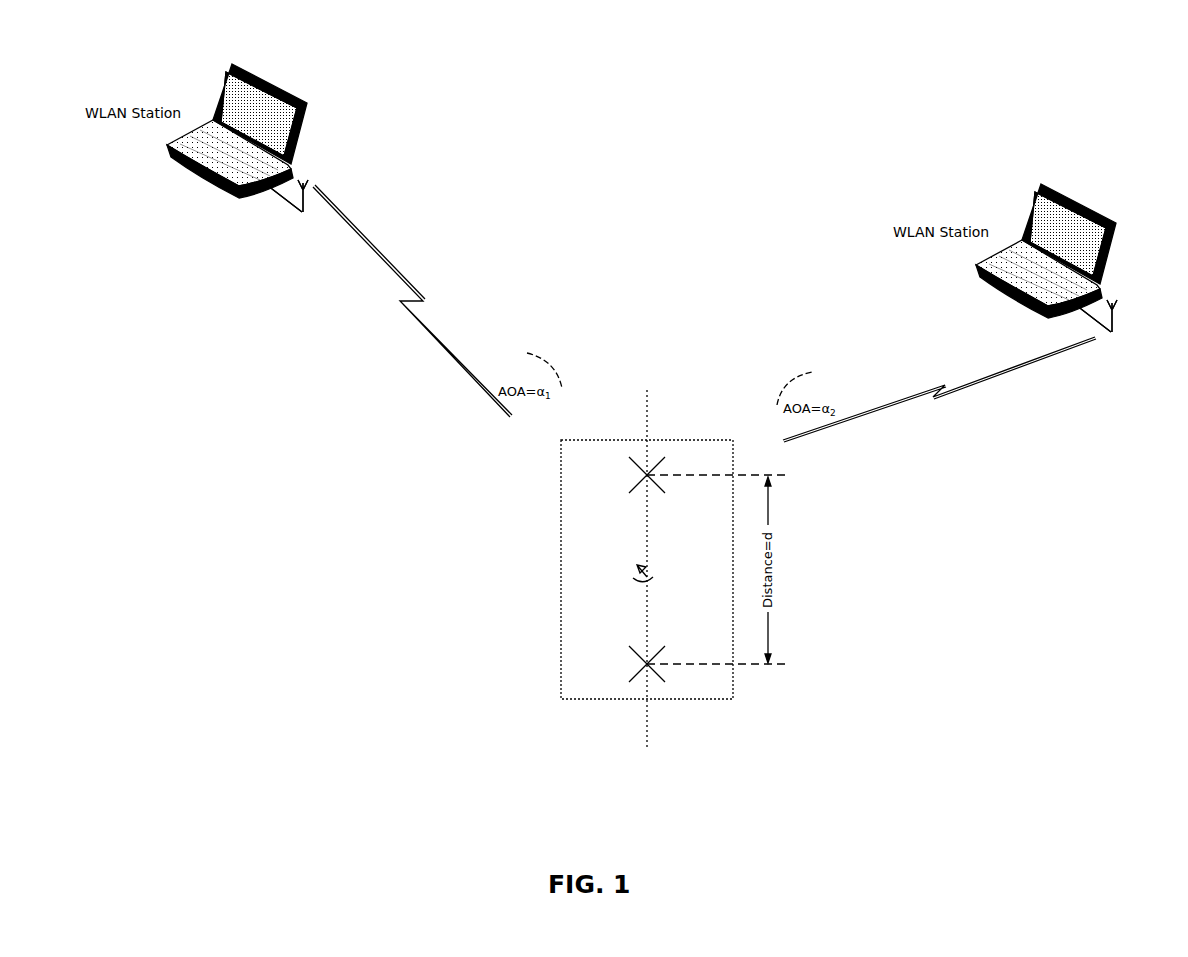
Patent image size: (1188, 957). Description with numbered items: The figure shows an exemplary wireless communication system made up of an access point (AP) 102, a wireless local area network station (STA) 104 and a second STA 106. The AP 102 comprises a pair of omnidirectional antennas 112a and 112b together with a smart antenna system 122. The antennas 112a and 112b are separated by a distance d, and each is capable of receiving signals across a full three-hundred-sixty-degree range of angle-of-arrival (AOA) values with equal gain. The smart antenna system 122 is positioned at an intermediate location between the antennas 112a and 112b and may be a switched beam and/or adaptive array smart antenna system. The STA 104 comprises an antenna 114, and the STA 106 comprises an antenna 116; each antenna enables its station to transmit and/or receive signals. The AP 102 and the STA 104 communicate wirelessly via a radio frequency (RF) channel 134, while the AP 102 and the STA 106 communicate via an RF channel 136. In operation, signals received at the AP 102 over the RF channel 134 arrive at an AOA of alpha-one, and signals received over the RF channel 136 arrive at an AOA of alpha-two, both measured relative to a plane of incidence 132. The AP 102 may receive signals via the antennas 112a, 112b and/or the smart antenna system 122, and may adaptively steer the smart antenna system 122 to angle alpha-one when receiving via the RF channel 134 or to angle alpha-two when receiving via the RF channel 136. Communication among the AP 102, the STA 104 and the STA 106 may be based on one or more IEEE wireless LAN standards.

The access point 102 is at (705, 440).
The WLAN station 104 is at (212, 78).
The STA 106 is at (1025, 198).
The omnidirectional antenna 112a is at (640, 476).
The omnidirectional antenna 112b is at (640, 664).
The antenna 114 is at (281, 200).
The antenna 116 is at (1113, 318).
The smart antenna system 122 is at (657, 573).
The plane of incidence 132 is at (647, 738).
The RF channel 134 is at (393, 268).
The RF channel 136 is at (918, 391).